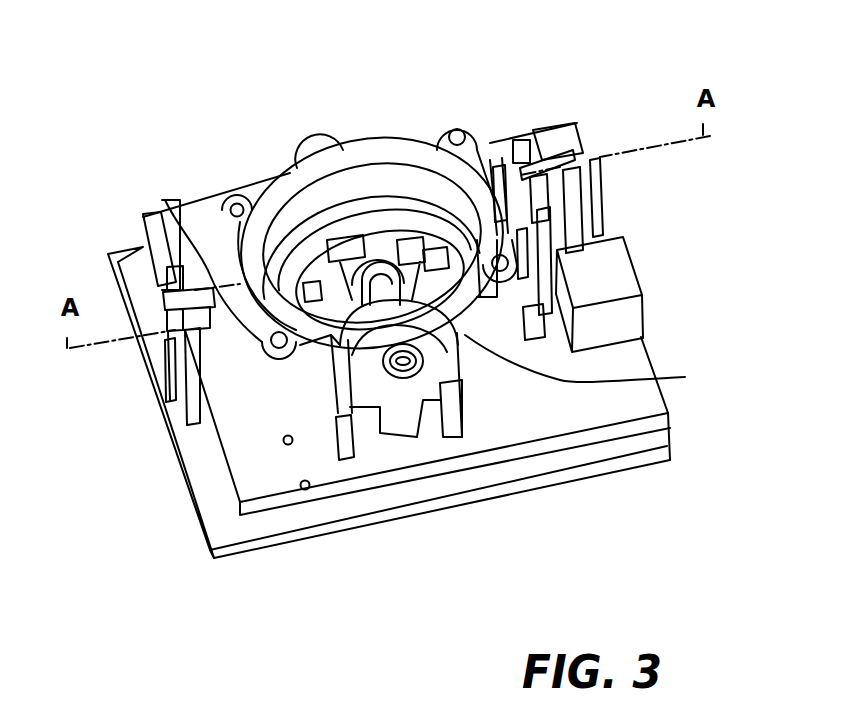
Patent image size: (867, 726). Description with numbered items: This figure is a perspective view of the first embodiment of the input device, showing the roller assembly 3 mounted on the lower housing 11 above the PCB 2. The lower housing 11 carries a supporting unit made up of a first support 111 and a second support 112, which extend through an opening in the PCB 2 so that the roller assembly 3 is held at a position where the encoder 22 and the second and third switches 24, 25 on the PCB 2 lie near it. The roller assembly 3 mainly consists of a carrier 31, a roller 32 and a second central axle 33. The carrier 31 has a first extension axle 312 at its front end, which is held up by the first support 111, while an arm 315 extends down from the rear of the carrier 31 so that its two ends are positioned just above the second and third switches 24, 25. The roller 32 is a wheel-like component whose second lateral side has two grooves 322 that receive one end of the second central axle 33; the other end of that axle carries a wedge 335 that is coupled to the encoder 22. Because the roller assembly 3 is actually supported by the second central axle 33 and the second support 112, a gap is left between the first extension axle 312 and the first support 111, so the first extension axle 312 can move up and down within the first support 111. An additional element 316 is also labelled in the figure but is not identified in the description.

The PCB 2 is at (243, 467).
The roller assembly 3 is at (281, 168).
The lower housing 11 is at (310, 512).
The encoder 22 is at (443, 367).
The second switch 24 is at (605, 173).
The third switch 25 is at (633, 263).
The carrier 31 is at (198, 240).
The roller 32 is at (402, 157).
The second central axle 33 is at (357, 255).
The first support 111 is at (173, 213).
The second support 112 is at (520, 147).
The first extension axle 312 is at (157, 310).
The arm 315 is at (640, 250).
The mounting lug 316 is at (457, 128).
The grooves 322 is at (601, 364).
The wedge 335 is at (403, 378).